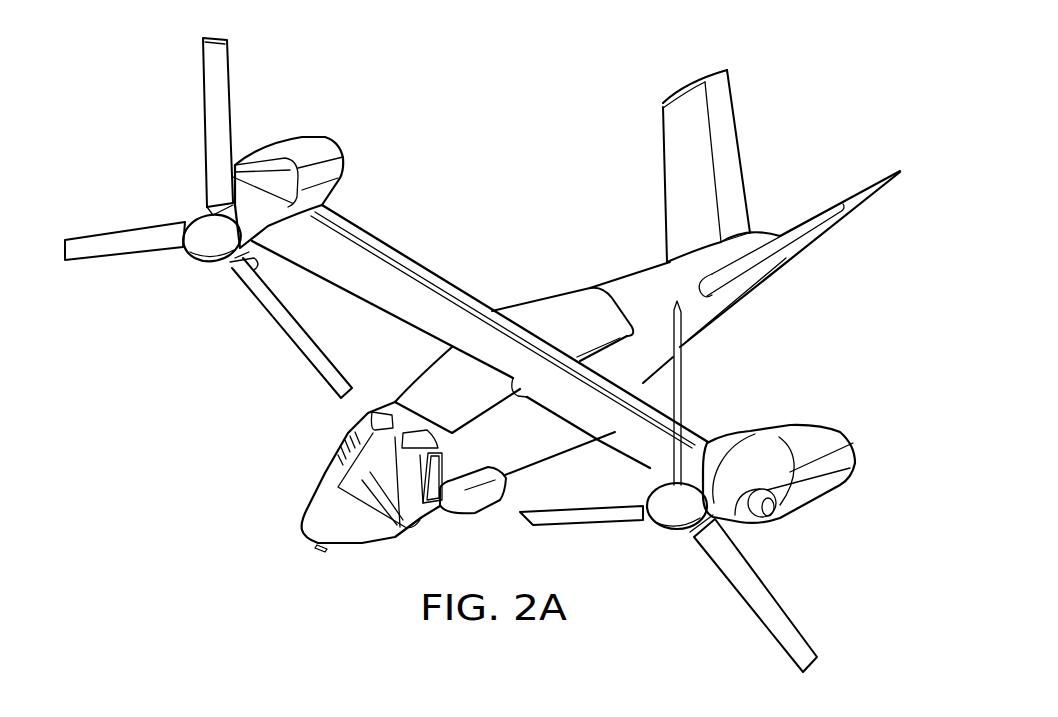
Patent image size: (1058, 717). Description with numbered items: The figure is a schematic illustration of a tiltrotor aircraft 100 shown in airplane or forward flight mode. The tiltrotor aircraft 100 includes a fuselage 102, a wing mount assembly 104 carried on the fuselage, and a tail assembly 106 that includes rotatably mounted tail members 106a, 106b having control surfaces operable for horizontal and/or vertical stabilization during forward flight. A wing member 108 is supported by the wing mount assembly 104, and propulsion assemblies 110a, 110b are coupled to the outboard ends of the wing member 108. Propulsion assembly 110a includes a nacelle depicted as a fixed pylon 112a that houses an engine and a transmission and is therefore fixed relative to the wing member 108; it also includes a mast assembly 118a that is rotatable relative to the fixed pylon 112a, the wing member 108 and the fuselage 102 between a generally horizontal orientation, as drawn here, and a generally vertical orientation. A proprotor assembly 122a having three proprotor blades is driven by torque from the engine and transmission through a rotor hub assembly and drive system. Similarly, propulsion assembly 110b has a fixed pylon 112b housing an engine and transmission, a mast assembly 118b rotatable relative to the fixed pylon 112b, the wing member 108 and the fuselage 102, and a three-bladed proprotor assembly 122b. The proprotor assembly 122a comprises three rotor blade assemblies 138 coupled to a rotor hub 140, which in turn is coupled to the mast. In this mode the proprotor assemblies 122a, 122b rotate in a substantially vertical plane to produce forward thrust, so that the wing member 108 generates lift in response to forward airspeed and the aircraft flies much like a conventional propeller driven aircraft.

The tiltrotor aircraft 100 is at (553, 172).
The fuselage 102 is at (357, 548).
The wing mount assembly 104 is at (560, 311).
The tail assembly 106 is at (740, 142).
The tail member 106a is at (870, 197).
The tail member 106b is at (714, 70).
The wing member 108 is at (437, 302).
The propulsion assembly 110a is at (816, 442).
The propulsion assembly 110b is at (303, 163).
The fixed pylon 112a is at (828, 433).
The fixed pylon 112b is at (290, 150).
The mast assembly 118a is at (733, 450).
The mast assembly 118b is at (252, 268).
The proprotor assembly 122a is at (657, 533).
The proprotor assembly 122b is at (184, 257).
The rotor blade assembly 138 is at (747, 607).
The rotor hub 140 is at (648, 535).